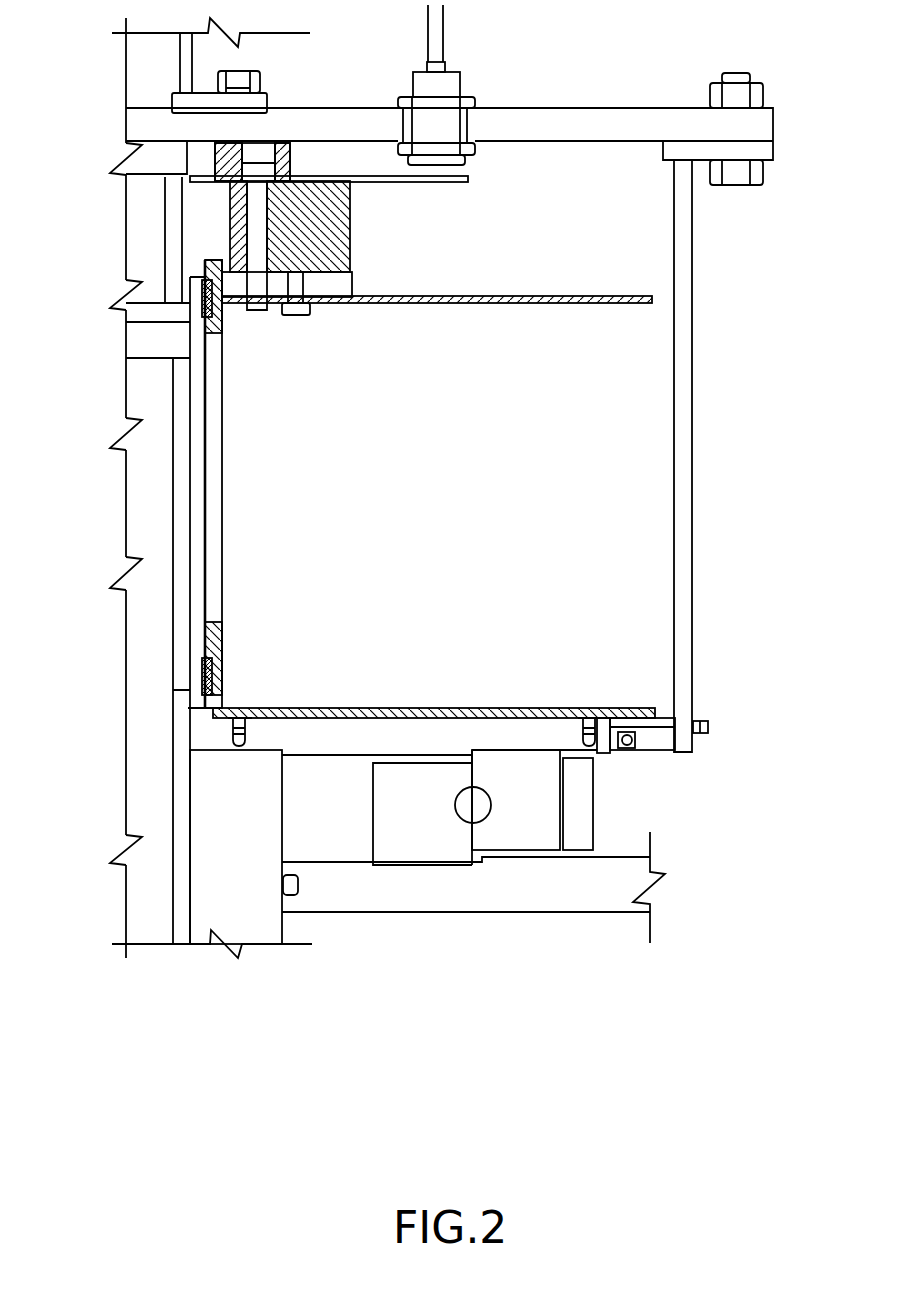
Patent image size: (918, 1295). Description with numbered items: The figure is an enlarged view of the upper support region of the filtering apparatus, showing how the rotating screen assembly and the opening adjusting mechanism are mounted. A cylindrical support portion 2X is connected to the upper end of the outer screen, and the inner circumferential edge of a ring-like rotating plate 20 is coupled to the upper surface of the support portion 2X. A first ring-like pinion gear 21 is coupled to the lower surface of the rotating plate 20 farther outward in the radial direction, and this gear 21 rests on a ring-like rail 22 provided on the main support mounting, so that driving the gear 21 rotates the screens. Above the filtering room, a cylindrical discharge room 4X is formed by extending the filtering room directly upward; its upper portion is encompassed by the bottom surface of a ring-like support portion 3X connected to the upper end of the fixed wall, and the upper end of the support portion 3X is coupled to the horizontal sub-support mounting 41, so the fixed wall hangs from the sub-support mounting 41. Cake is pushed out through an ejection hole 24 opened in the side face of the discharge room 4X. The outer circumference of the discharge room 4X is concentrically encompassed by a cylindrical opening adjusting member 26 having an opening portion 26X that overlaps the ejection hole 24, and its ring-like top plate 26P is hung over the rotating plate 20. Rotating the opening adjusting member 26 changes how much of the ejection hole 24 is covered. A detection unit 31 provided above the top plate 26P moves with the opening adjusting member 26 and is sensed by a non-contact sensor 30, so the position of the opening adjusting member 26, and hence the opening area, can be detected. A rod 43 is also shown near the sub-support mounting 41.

The cylindrical support portion 2X is at (223, 802).
The ring-like support portion 3X is at (140, 335).
The cylindrical discharge room 4X is at (140, 497).
The ring-like rotating plate 20 is at (395, 708).
The first ring-like pinion gear 21 is at (508, 770).
The ring-like rail 22 is at (422, 770).
The ejection hole 24 is at (196, 502).
The opening adjusting member 26 is at (207, 587).
The opening portion 26X is at (215, 538).
The ring-like top plate 26P is at (527, 295).
The non-contact sensor 30 is at (447, 157).
The detection unit 31 is at (412, 175).
The sub-support mounting 41 is at (345, 125).
The rod 43 is at (680, 510).